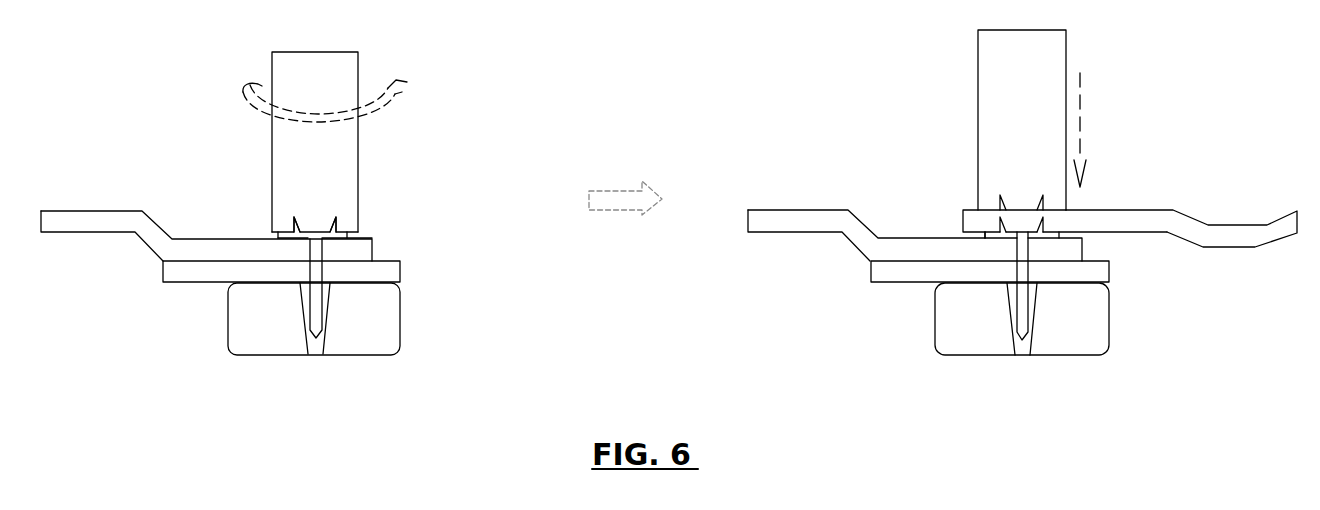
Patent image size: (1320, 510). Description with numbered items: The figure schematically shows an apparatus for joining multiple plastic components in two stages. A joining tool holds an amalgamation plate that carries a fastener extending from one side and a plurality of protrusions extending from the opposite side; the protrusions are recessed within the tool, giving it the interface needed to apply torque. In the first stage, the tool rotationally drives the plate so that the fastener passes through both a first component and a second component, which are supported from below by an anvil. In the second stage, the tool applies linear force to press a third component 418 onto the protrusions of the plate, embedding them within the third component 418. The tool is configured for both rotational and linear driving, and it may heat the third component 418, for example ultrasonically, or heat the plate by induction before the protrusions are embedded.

The third component 418 is at (1268, 223).